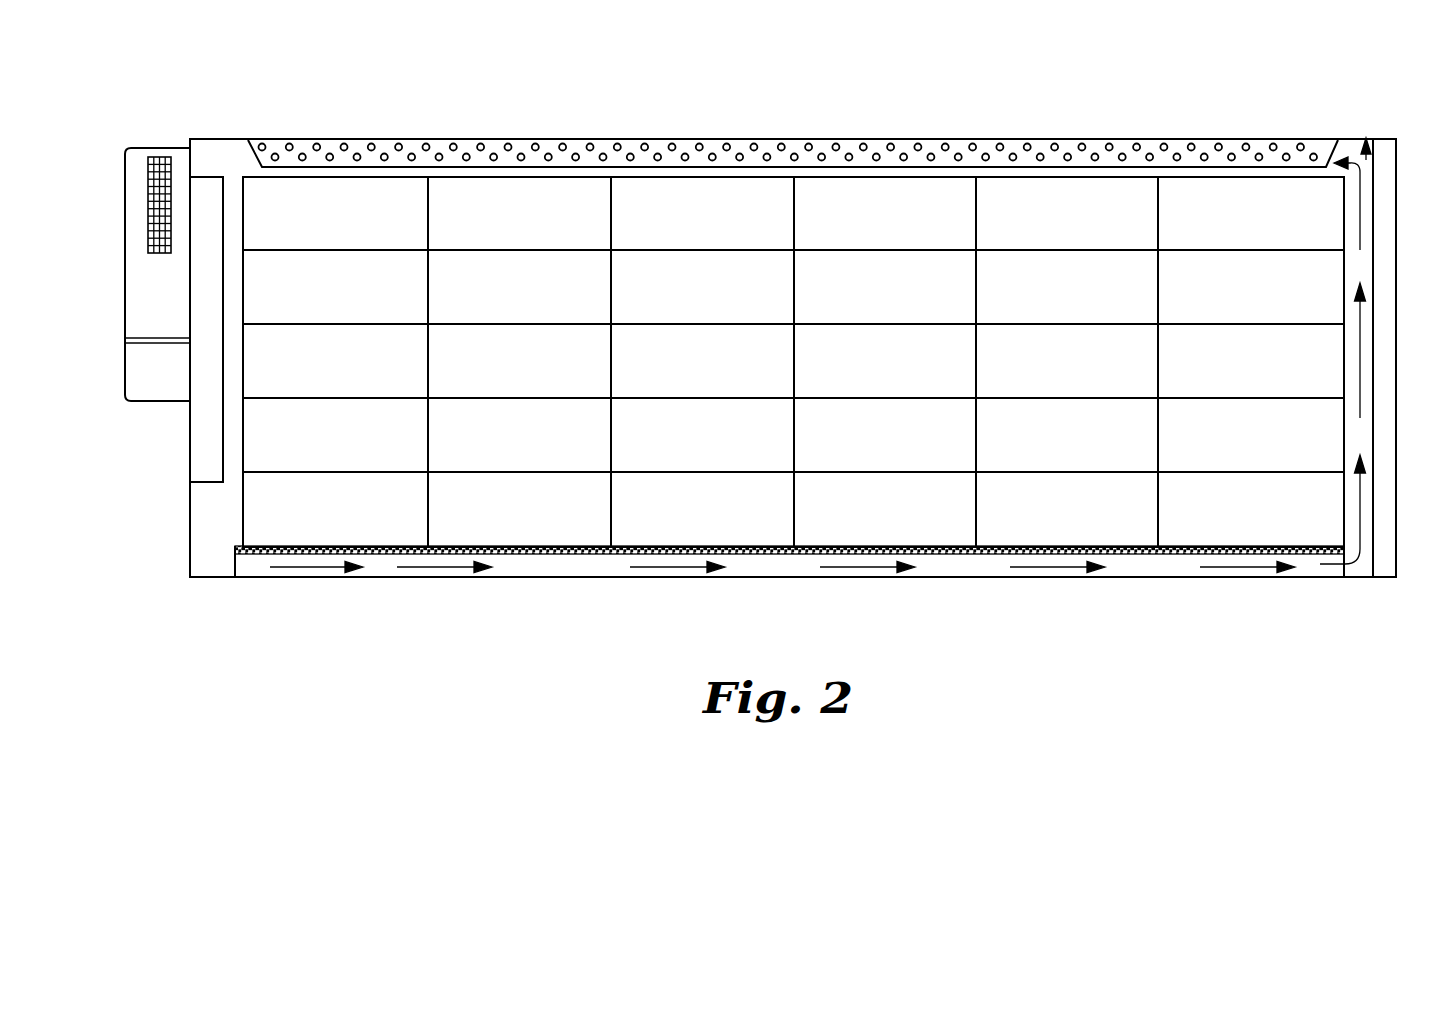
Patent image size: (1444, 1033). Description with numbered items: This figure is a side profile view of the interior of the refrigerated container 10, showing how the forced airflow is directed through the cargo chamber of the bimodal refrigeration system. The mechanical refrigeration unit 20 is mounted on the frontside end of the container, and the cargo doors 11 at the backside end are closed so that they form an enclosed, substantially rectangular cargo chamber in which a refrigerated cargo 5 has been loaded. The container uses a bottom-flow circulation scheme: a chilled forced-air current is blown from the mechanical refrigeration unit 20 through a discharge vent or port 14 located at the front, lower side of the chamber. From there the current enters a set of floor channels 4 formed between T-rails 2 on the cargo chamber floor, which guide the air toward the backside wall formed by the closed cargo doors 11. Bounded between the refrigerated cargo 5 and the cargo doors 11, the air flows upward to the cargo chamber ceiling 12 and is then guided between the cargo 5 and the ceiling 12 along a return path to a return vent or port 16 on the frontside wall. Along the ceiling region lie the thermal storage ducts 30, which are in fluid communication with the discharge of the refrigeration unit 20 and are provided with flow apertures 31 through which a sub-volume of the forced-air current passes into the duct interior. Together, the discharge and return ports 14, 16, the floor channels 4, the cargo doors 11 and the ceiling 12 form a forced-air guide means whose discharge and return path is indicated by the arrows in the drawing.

The T-rails 2 is at (528, 547).
The floor channels 4 is at (580, 566).
The refrigerated cargo 5 is at (713, 377).
The refrigerated container 10 is at (938, 100).
The cargo doors 11 is at (1387, 174).
The cargo chamber ceiling 12 is at (1352, 152).
The discharge vent or port 14 is at (205, 498).
The return vent or port 16 is at (212, 165).
The mechanical refrigeration unit 20 is at (182, 158).
The thermal storage ducts 30 is at (383, 142).
The flow apertures 31 is at (489, 150).